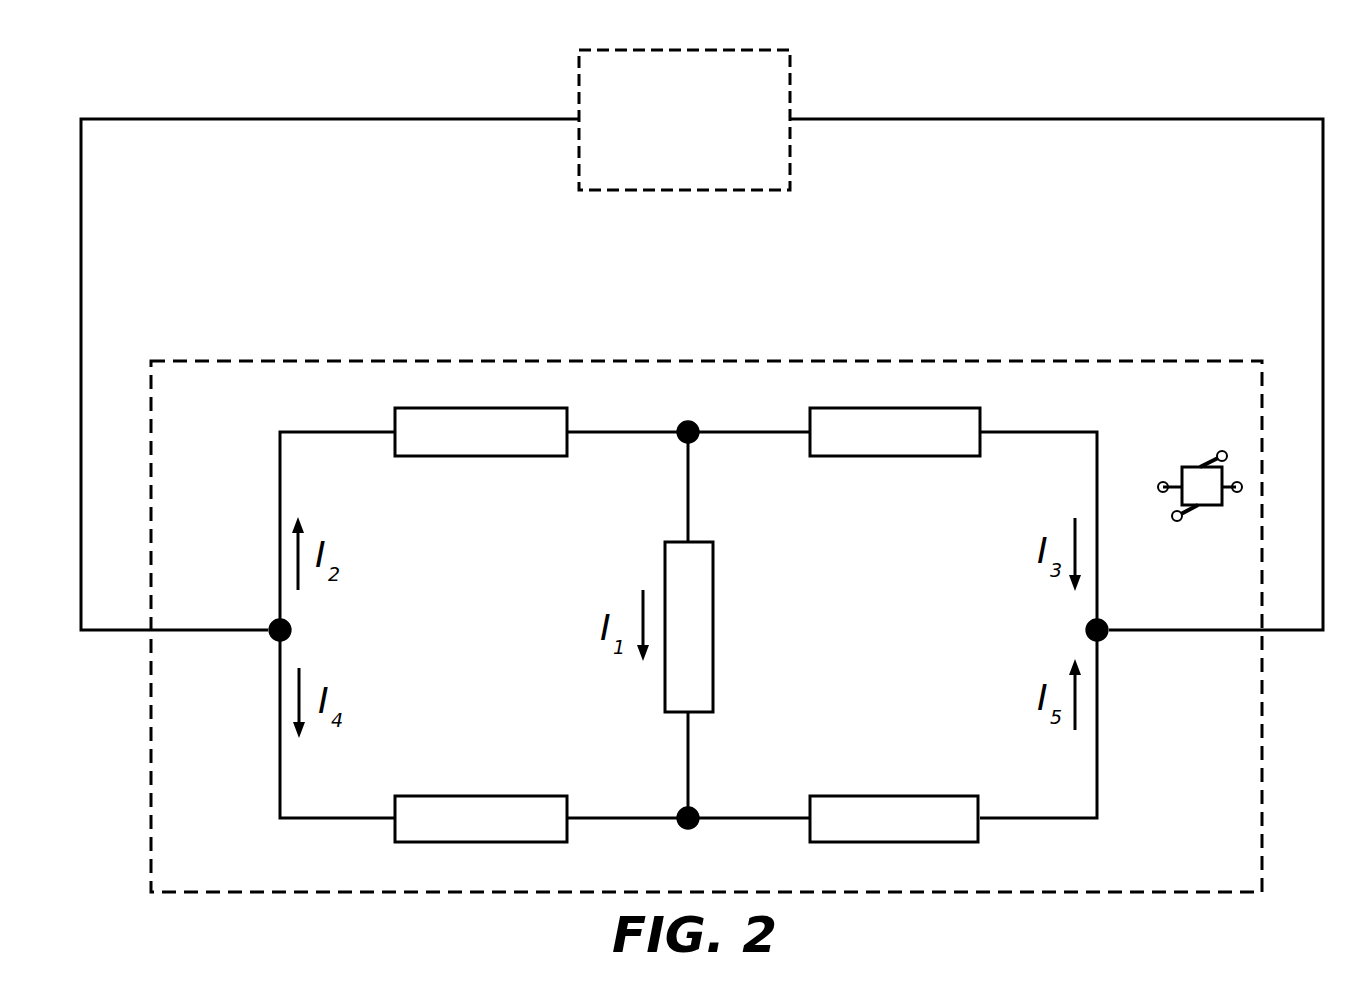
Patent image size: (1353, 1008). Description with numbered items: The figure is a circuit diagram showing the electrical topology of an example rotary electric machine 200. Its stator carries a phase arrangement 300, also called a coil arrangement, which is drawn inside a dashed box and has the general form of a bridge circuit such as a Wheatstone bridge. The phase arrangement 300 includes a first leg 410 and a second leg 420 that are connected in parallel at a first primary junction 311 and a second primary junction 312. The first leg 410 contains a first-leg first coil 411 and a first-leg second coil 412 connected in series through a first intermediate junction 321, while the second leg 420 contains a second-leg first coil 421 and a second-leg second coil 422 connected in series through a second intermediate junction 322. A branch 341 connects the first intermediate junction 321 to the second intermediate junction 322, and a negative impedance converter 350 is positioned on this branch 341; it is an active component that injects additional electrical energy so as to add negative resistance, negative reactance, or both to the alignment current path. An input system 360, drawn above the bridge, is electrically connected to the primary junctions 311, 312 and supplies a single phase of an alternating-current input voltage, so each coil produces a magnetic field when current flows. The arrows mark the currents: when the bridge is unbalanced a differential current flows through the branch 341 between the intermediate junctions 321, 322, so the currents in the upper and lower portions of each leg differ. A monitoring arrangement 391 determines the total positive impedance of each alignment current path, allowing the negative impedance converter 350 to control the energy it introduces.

The rotary electric machine 200 is at (1338, 61).
The input system 360 is at (710, 134).
The phase arrangement 300 is at (1234, 867).
The first primary junction 311 is at (270, 635).
The second primary junction 312 is at (1100, 629).
The first intermediate junction 321 is at (688, 430).
The second intermediate junction 322 is at (684, 826).
The branch 341 is at (688, 498).
The negative impedance converter 350 is at (687, 623).
The monitoring arrangement 391 is at (1212, 498).
The first leg 410 is at (282, 470).
The first-leg first coil 411 is at (467, 433).
The first-leg second coil 412 is at (885, 435).
The second leg 420 is at (280, 812).
The second-leg first coil 421 is at (442, 818).
The second-leg second coil 422 is at (883, 812).